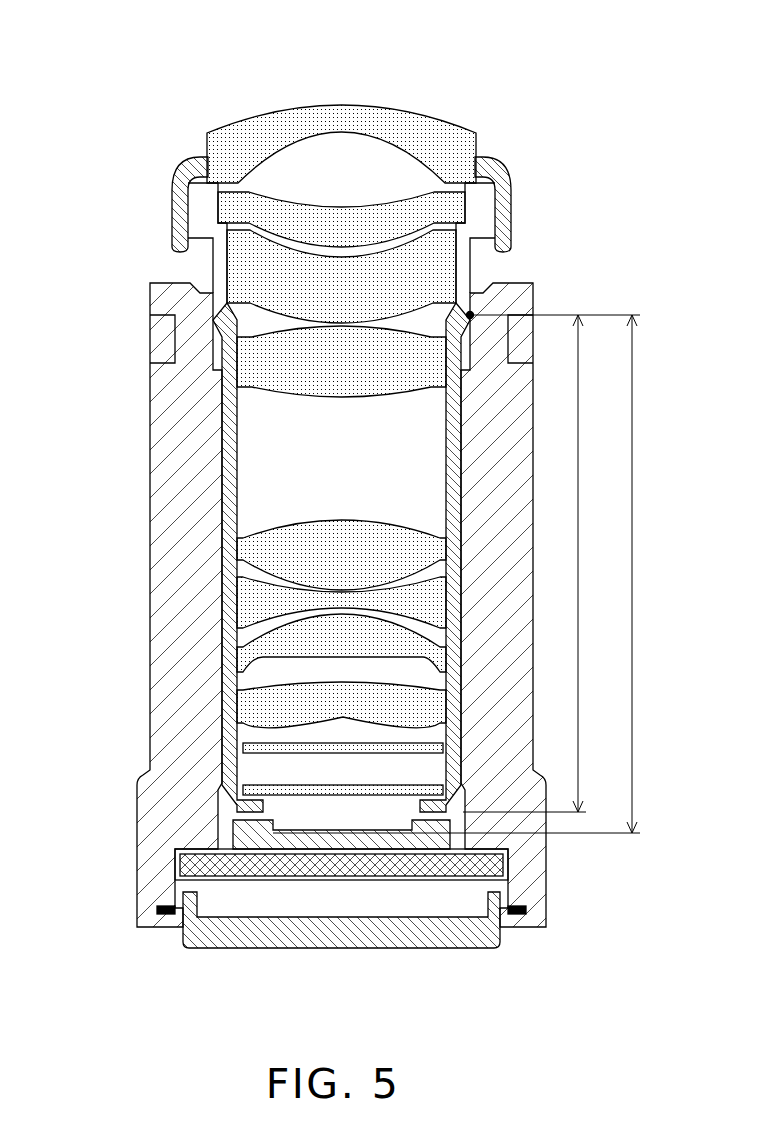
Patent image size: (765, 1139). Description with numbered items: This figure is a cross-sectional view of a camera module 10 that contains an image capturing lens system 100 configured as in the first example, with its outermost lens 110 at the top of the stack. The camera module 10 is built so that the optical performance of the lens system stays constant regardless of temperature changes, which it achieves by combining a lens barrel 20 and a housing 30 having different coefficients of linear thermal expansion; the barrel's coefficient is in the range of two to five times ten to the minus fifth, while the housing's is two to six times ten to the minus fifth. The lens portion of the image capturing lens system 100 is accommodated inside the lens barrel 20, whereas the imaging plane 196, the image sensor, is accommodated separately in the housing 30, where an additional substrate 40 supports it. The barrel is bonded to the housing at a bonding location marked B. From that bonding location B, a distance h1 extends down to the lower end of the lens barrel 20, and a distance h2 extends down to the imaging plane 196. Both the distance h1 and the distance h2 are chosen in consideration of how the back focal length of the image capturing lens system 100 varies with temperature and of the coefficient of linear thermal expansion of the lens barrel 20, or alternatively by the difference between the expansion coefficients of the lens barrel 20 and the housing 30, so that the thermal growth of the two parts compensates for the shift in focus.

The image capturing lens system 100 is at (300, 90).
The first lens 110 is at (407, 113).
The camera module 10 is at (535, 177).
The lens barrel 20 is at (213, 267).
The housing 30 is at (152, 613).
The substrate 40 is at (247, 833).
The imaging plane 196 is at (312, 838).
The reference point B is at (471, 312).
The distance h1 is at (534, 563).
The distance h2 is at (467, 574).